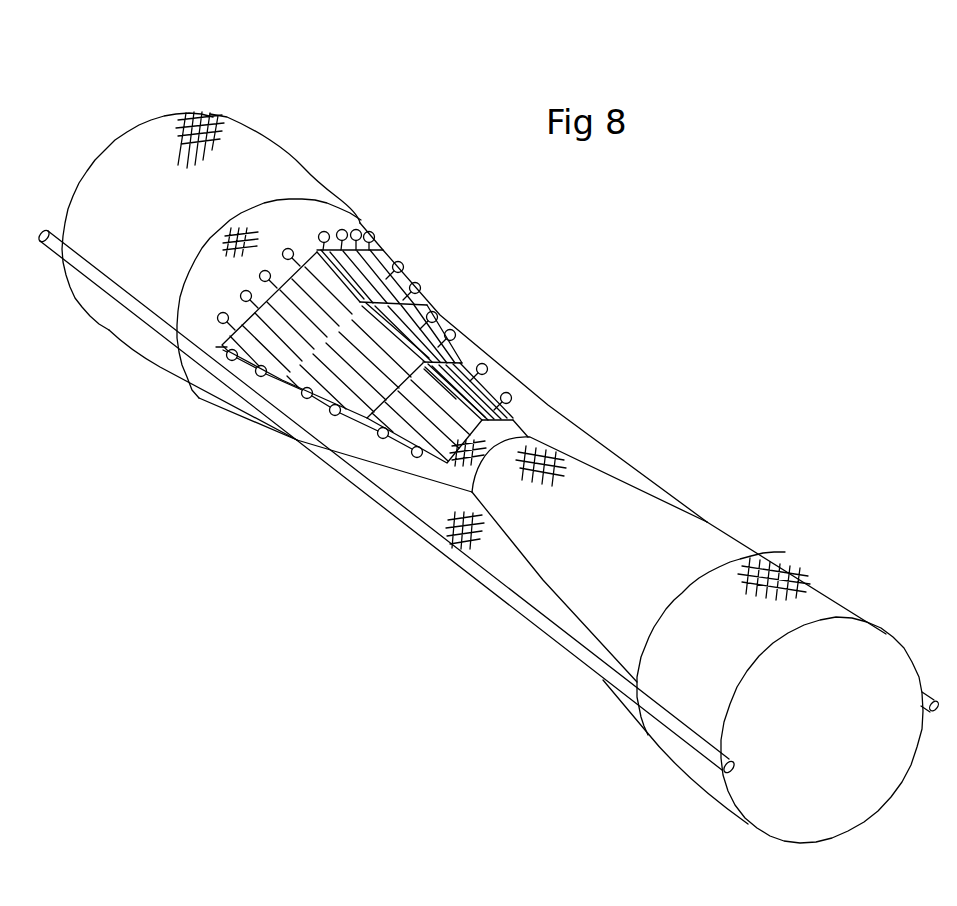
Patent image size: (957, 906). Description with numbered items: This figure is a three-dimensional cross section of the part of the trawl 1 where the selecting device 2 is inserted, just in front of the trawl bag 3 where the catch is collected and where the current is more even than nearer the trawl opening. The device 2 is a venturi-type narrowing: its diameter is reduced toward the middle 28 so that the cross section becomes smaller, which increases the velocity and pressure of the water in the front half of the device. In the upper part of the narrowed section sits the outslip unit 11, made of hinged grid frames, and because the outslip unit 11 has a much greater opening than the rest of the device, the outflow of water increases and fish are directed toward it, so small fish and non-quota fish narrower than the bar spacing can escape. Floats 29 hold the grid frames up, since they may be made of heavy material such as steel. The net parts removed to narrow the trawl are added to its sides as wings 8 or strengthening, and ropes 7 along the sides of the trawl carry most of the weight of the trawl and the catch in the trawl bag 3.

The trawl 1 is at (245, 157).
The selecting device 2 is at (647, 261).
The trawl bag 3 is at (840, 598).
The ropes 7 is at (547, 627).
The wings 8 is at (433, 508).
The outslip unit 11 is at (385, 253).
The middle narrowing 28 is at (527, 434).
The floats 29 is at (361, 228).